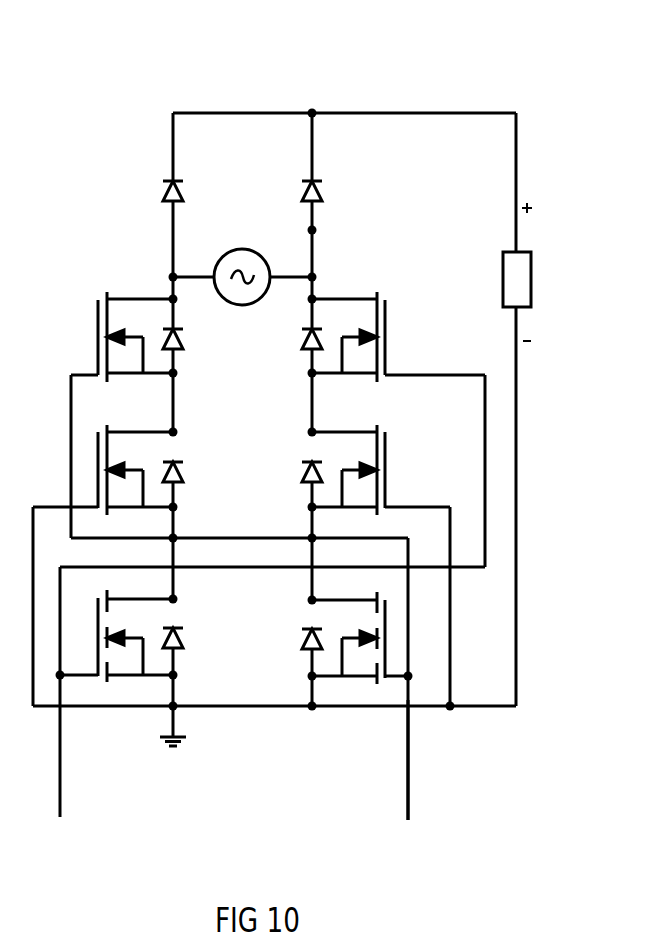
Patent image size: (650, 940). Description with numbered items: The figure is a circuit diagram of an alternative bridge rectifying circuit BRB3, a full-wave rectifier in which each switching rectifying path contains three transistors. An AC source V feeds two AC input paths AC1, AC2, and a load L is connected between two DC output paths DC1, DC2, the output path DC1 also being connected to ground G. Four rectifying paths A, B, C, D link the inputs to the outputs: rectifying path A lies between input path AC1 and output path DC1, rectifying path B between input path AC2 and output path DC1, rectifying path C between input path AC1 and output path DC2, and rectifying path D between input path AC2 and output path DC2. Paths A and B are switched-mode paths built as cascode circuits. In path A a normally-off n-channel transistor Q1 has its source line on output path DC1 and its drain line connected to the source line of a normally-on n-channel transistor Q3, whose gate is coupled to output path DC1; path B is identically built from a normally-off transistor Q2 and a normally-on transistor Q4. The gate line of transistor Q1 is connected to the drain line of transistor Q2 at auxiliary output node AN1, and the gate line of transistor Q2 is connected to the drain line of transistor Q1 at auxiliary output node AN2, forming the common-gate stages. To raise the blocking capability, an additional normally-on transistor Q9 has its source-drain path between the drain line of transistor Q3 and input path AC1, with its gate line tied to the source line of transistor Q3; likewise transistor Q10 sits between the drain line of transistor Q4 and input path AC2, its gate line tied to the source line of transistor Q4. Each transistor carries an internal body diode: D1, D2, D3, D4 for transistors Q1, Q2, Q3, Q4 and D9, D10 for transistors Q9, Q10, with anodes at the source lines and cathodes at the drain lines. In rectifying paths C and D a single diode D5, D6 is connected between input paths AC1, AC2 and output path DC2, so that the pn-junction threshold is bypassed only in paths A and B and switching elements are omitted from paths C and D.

The bridge rectifying circuit BRB3 is at (96, 46).
The output path DC2 is at (344, 98).
The output path DC1 is at (274, 692).
The input path AC1 is at (151, 289).
The input path AC2 is at (334, 289).
The rectifying path A is at (205, 520).
The rectifying path B is at (290, 520).
The rectifying path C is at (218, 155).
The rectifying path D is at (277, 155).
The AC source V is at (242, 258).
The load L is at (530, 409).
The ground G is at (186, 733).
The normally-off n-channel field-effect transistor Q1 is at (123, 681).
The normally-off n-channel field-effect transistor Q2 is at (358, 683).
The normally-on n-channel field-effect transistor Q3 is at (97, 470).
The normally-on n-channel field-effect transistor Q4 is at (393, 500).
The normally-on field-effect transistor Q9 is at (97, 320).
The normally-on field-effect transistor Q10 is at (388, 362).
The body diode D1 is at (187, 653).
The body diode D2 is at (295, 653).
The body diode D3 is at (187, 520).
The body diode D4 is at (295, 520).
The diode D5 is at (190, 229).
The diode D6 is at (293, 229).
The body diode D9 is at (188, 380).
The body diode D10 is at (292, 380).
The auxiliary output node AN1 is at (57, 715).
The auxiliary output node AN2 is at (407, 782).